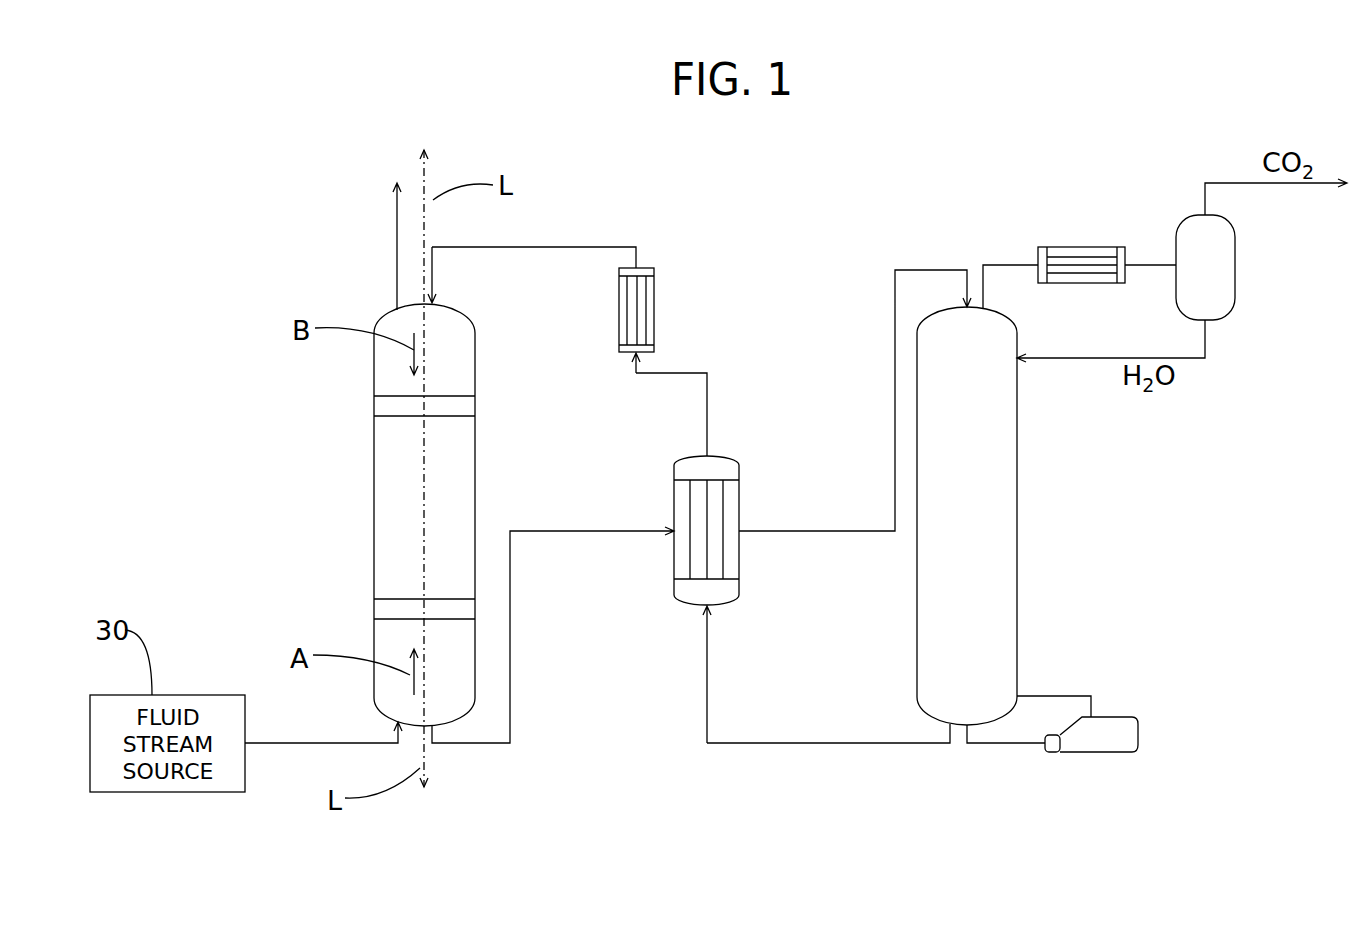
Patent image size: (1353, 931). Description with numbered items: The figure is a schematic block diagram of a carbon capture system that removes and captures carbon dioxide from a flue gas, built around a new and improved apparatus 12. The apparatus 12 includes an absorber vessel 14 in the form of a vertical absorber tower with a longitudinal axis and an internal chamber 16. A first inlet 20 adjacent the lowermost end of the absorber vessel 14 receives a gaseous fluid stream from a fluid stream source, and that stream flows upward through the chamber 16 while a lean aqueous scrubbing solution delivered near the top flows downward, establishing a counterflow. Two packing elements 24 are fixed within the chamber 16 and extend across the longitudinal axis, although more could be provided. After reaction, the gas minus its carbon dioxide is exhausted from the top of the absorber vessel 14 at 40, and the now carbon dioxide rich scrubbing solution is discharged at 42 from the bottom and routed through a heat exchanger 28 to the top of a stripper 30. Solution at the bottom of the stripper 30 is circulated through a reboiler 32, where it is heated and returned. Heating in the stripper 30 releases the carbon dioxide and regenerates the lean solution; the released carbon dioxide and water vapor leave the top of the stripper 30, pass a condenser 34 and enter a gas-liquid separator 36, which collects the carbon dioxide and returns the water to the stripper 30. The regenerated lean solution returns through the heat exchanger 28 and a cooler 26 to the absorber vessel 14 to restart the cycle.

The apparatus 12 is at (385, 515).
The absorber vessel 14 is at (374, 487).
The internal chamber 16 is at (453, 523).
The first inlet 20 is at (395, 725).
The packing element 24 is at (445, 412).
The cooler 26 is at (650, 305).
The heat exchanger 28 is at (730, 500).
The stripper 30 is at (1005, 540).
The reboiler 32 is at (1105, 745).
The condenser 34 is at (1047, 247).
The gas-liquid separator 36 is at (1225, 280).
The exhaust 40 is at (397, 258).
The discharge 42 is at (432, 728).